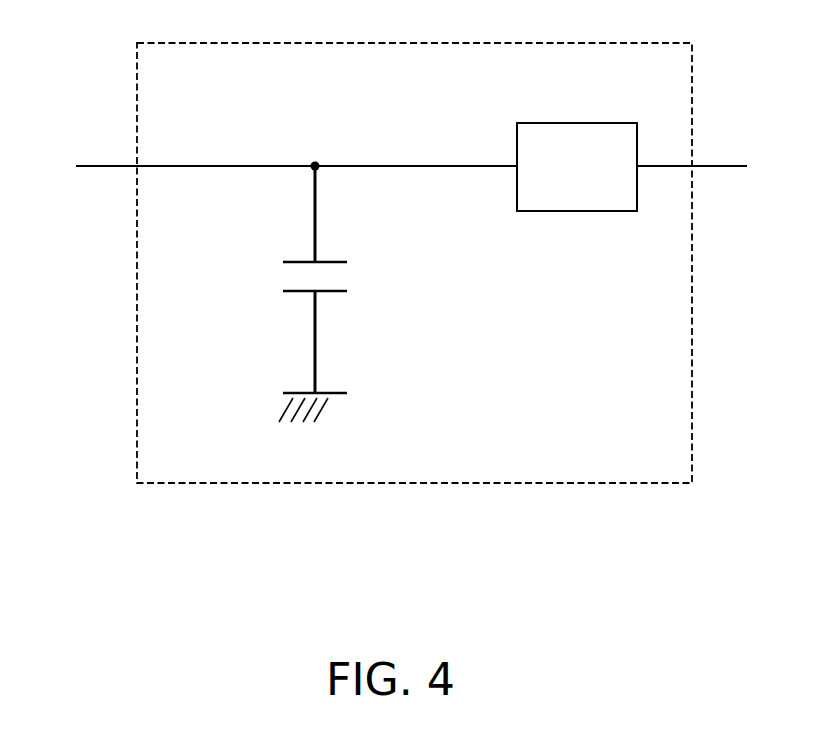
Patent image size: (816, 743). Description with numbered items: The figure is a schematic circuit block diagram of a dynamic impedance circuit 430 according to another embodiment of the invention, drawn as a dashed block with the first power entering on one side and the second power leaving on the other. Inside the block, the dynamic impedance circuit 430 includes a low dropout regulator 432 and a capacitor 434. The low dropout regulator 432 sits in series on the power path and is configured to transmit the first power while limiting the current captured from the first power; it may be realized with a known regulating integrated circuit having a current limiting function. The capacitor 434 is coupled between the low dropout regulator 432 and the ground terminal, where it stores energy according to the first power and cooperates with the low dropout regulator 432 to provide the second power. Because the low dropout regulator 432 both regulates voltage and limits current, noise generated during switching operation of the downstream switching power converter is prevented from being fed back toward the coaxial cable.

The dynamic impedance circuit 430 is at (595, 534).
The low dropout regulator 432 is at (575, 211).
The capacitor 434 is at (352, 278).